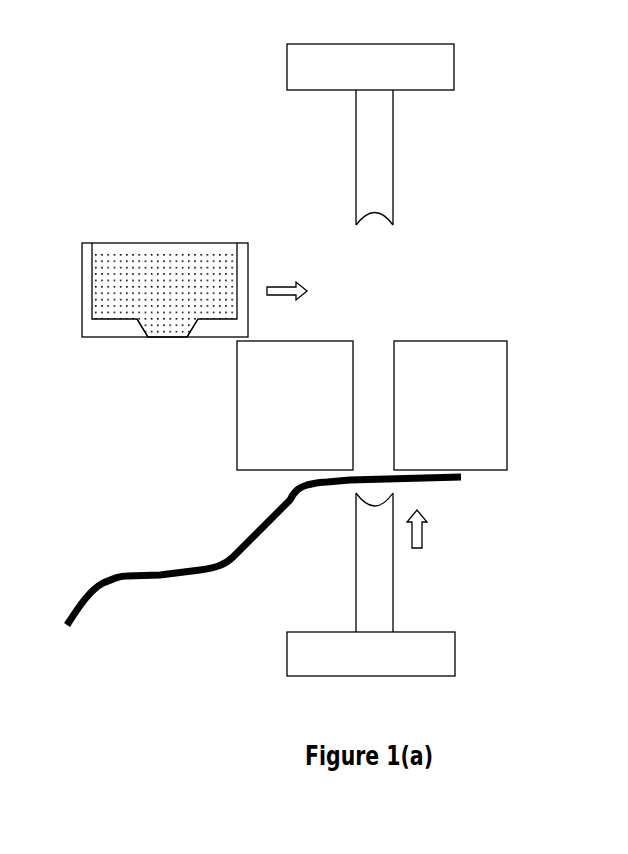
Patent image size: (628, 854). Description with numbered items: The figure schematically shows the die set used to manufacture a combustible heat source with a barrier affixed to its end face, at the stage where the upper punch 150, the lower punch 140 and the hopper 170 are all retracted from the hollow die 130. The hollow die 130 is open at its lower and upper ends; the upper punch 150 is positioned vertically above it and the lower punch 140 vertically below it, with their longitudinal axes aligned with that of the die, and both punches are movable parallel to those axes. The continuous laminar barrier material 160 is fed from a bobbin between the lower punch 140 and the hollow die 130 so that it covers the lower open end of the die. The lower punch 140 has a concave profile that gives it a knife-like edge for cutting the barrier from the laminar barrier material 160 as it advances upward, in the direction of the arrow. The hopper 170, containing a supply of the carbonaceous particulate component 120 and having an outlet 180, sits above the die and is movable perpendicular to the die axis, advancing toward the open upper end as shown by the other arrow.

The carbonaceous particulate component 120 is at (202, 285).
The hollow die 130 is at (483, 393).
The lower punch 140 is at (373, 613).
The upper punch 150 is at (370, 143).
The continuous laminar barrier material 160 is at (223, 567).
The hopper 170 is at (148, 243).
The outlet 180 is at (169, 337).